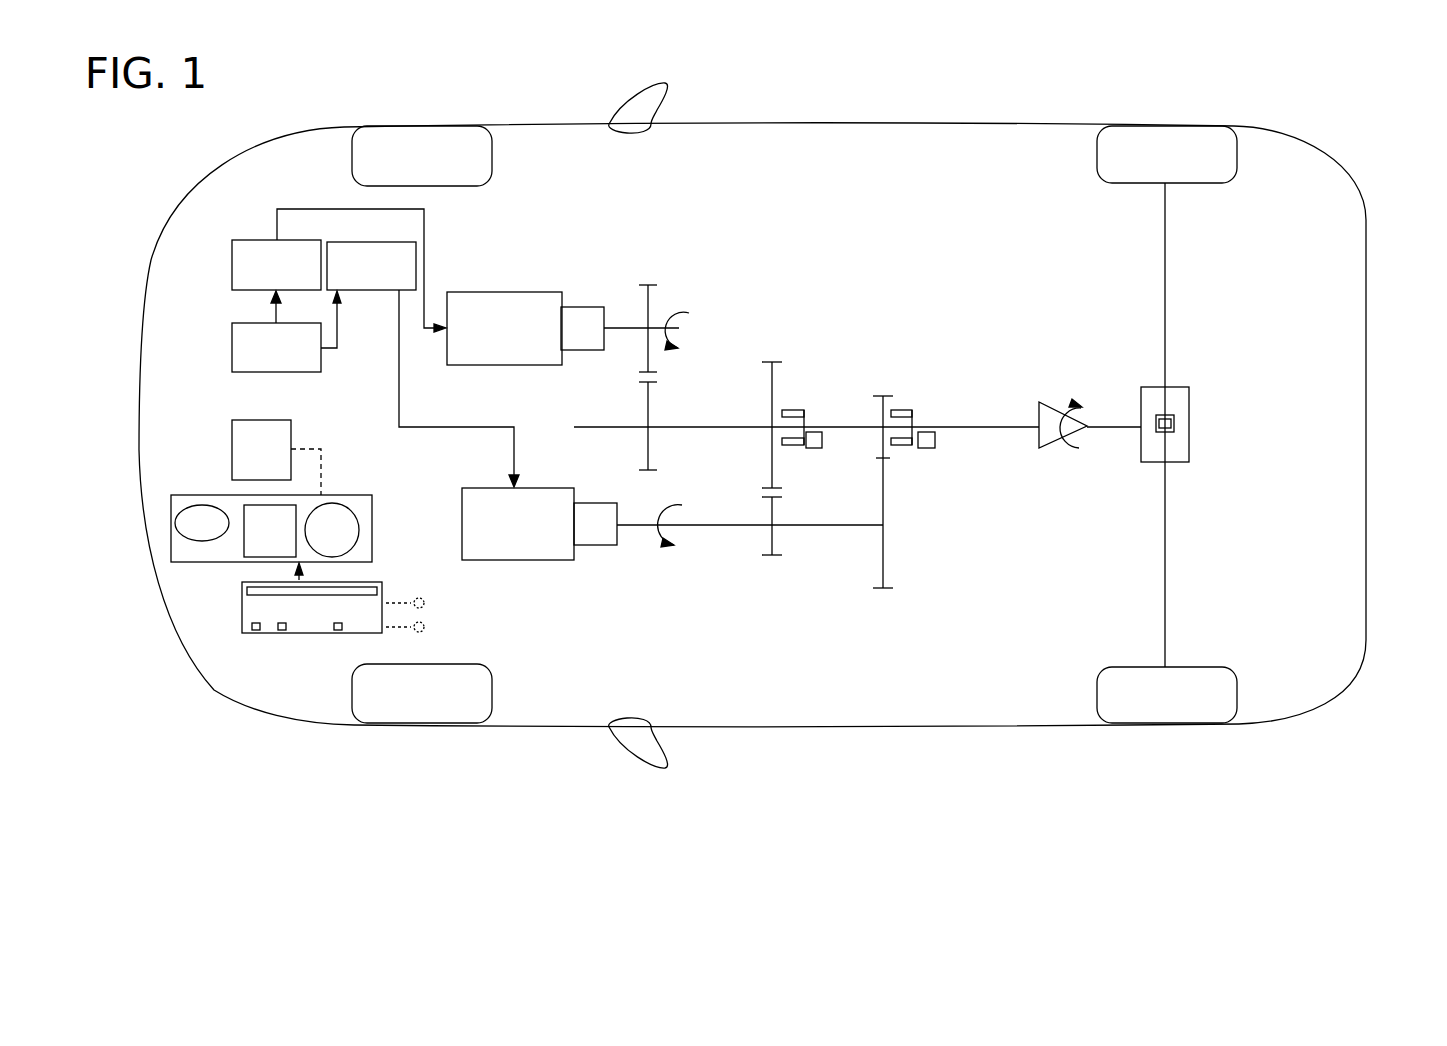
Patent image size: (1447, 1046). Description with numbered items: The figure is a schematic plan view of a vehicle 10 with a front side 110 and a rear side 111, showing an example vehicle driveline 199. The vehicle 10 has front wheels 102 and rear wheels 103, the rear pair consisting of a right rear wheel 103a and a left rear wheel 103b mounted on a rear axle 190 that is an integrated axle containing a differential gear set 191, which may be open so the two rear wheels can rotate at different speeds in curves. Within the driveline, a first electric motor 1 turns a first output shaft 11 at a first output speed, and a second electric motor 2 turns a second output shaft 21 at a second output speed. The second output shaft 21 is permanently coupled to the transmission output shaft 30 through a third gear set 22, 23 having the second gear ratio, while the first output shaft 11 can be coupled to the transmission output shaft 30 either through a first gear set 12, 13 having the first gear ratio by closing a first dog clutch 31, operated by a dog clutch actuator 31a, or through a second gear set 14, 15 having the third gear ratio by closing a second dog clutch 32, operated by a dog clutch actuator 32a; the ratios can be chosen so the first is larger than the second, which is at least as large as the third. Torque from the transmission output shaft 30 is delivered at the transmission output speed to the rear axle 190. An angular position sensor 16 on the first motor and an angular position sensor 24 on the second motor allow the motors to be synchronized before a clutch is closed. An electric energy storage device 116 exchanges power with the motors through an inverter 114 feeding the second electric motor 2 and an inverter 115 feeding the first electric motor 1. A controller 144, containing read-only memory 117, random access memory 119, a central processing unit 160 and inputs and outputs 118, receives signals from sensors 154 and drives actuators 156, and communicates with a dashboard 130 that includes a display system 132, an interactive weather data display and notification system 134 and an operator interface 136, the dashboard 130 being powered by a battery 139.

The first electric motor 1 is at (513, 560).
The second electric motor 2 is at (505, 292).
The vehicle 10 is at (985, 124).
The first output shaft 11 is at (750, 530).
The first gear set gear 12 is at (776, 530).
The first gear set gear 13 is at (772, 445).
The second gear set gear 14 is at (888, 540).
The second gear set gear 15 is at (884, 402).
The angular position sensor 16 is at (590, 545).
The second output shaft 21 is at (635, 325).
The third gear set gear 22 is at (655, 300).
The third gear set gear 23 is at (648, 403).
The angular position sensor 24 is at (584, 307).
The transmission output shaft 30 is at (969, 422).
The first dog clutch 31 is at (788, 408).
The dog clutch actuator 31a is at (813, 449).
The second dog clutch 32 is at (896, 408).
The dog clutch actuator 32a is at (928, 449).
The front wheels 102 is at (470, 160).
The rear wheels 103 is at (1244, 198).
The right rear wheel 103a is at (1166, 126).
The left rear wheel 103b is at (1167, 723).
The front side 110 is at (110, 220).
The rear side 111 is at (1412, 158).
The inverter 114 is at (339, 270).
The inverter 115 is at (423, 364).
The electric energy storage device 116 is at (286, 331).
The read-only memory 117 is at (257, 631).
The inputs and outputs 118 is at (367, 595).
The random access memory 119 is at (287, 630).
The dashboard 130 is at (373, 498).
The display system 132 is at (202, 523).
The interactive weather data display and notification system 134 is at (270, 531).
The operator interface 136 is at (332, 530).
The battery 139 is at (276, 457).
The controller 144 is at (312, 598).
The sensors 154 is at (428, 604).
The actuators 156 is at (428, 627).
The central processing unit 160 is at (340, 631).
The rear axle 190 is at (1180, 481).
The differential gear set 191 is at (1178, 422).
The vehicle driveline 199 is at (905, 201).